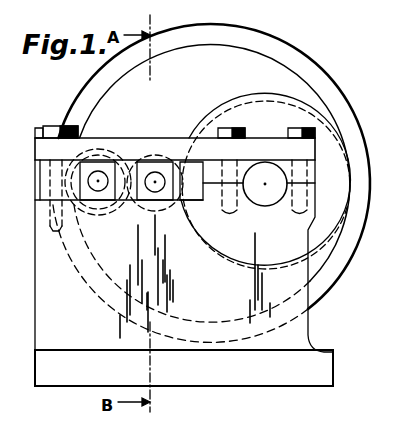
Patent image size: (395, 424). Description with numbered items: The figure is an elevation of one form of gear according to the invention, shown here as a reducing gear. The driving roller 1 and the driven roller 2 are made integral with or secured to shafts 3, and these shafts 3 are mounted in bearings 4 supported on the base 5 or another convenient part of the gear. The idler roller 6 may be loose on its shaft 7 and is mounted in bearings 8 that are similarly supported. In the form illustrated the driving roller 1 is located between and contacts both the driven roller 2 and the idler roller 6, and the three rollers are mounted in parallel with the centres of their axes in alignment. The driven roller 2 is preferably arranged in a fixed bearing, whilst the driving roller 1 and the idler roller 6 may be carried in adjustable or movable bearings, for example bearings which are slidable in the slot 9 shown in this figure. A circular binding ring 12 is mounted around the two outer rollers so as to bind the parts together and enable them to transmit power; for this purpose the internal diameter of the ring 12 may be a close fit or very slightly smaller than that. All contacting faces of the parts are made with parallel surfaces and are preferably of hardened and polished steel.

The driving roller 1 is at (154, 173).
The driven roller 2 is at (222, 256).
The shafts 3 is at (140, 204).
The bearings 4 is at (165, 198).
The base 5 is at (184, 368).
The idler roller 6 is at (74, 128).
The shaft 7 is at (96, 173).
The bearings 8 is at (85, 192).
The slot 9 is at (191, 162).
The circular binding ring 12 is at (312, 78).